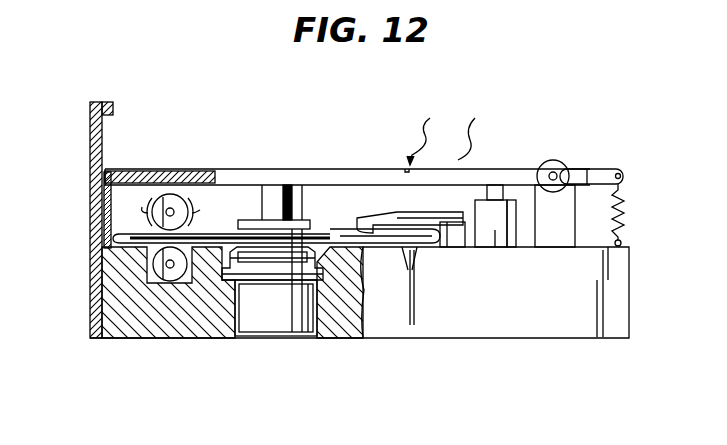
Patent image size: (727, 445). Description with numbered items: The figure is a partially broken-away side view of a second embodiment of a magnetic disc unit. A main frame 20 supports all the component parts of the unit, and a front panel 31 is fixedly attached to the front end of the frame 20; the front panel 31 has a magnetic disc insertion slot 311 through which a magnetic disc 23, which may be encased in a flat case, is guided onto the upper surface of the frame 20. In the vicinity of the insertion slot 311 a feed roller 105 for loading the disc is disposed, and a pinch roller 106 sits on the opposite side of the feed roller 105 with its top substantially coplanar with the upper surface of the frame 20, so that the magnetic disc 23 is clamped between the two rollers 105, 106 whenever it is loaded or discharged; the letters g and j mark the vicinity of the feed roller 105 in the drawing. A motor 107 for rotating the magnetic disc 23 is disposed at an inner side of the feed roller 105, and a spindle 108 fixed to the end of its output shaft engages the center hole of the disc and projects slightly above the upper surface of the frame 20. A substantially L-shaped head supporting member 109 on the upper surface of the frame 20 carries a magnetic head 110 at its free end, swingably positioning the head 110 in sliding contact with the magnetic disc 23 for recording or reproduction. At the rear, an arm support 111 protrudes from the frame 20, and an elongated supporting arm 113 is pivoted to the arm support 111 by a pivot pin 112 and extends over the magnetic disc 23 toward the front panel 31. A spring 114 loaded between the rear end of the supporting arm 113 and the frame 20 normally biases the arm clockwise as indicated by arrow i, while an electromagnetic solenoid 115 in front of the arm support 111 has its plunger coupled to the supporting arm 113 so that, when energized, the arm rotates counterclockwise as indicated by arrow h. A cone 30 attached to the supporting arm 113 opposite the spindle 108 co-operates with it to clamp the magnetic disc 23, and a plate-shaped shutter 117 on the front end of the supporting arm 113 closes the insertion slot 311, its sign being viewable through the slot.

The main frame 20 is at (150, 328).
The front panel 31 is at (92, 118).
The magnetic disc insertion slot 311 is at (100, 235).
The supporting arm 113 is at (368, 169).
The shutter 117 is at (113, 170).
The cone 30 is at (305, 186).
The feed roller 105 is at (183, 193).
The pinch roller 106 is at (185, 288).
The motor 107 is at (268, 322).
The spindle 108 is at (301, 335).
The magnetic head 110 is at (365, 232).
The magnetic disc 23 is at (405, 248).
The head supporting member 109 is at (443, 222).
The electromagnetic solenoid 115 is at (510, 212).
The arm support 111 is at (580, 225).
The pivot pin 112 is at (556, 166).
The spring 114 is at (620, 192).
The direction g is at (136, 206).
The direction j is at (200, 204).
The arrow h is at (423, 128).
The arrow i is at (467, 126).